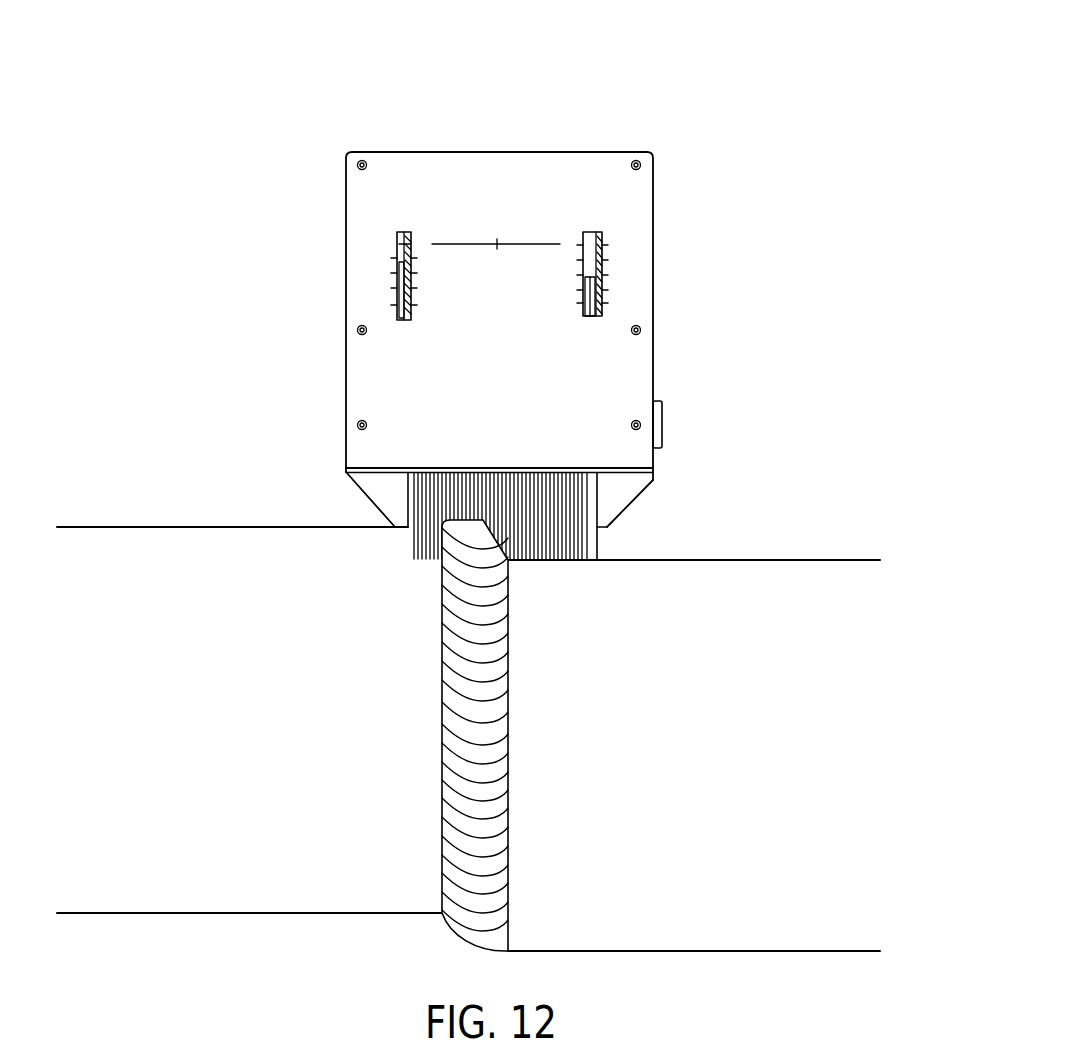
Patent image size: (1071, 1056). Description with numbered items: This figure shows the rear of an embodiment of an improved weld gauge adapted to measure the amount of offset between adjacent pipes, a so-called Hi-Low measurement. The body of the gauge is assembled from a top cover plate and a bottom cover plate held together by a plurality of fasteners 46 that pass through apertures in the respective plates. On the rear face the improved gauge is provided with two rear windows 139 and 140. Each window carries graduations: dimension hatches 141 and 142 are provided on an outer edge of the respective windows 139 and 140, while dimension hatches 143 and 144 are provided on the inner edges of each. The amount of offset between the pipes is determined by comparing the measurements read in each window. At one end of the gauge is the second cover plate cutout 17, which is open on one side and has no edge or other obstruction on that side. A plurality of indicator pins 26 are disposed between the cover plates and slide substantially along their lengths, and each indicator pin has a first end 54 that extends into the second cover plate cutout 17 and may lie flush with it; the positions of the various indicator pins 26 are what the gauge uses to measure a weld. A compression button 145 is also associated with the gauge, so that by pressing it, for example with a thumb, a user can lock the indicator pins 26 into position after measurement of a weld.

The second cover plate cutout 17 is at (457, 167).
The fasteners 46 is at (642, 162).
The rear window 139 is at (397, 240).
The rear window 140 is at (602, 237).
The dimension hatches 141 is at (393, 288).
The dimension hatches 142 is at (617, 269).
The dimension hatches 143 is at (393, 307).
The dimension hatches 144 is at (602, 303).
The compression button 145 is at (662, 423).
The indicator pins 26 is at (423, 507).
The first end 54 is at (597, 543).